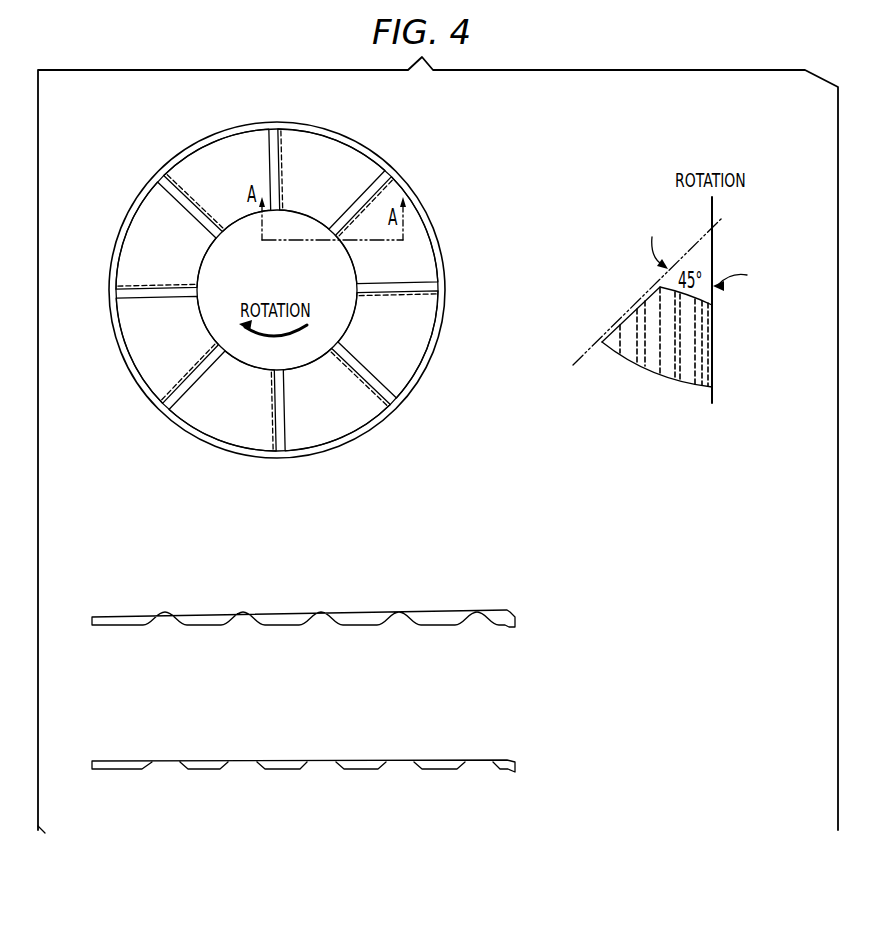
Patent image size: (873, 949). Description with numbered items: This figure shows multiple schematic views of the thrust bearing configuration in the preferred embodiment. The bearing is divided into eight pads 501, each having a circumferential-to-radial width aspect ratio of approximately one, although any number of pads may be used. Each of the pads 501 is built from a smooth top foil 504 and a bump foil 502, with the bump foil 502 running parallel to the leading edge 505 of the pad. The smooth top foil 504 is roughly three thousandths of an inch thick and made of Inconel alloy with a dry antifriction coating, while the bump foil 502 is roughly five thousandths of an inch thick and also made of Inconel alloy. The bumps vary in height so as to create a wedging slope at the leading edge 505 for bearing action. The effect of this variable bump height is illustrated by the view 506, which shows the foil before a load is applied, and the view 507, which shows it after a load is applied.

The pads 501 is at (391, 158).
The bump foil 502 is at (440, 298).
The smooth top foil 504 is at (348, 423).
The leading edge 505 is at (260, 388).
The view before load is applied 506 is at (458, 578).
The view after load is applied 507 is at (468, 727).